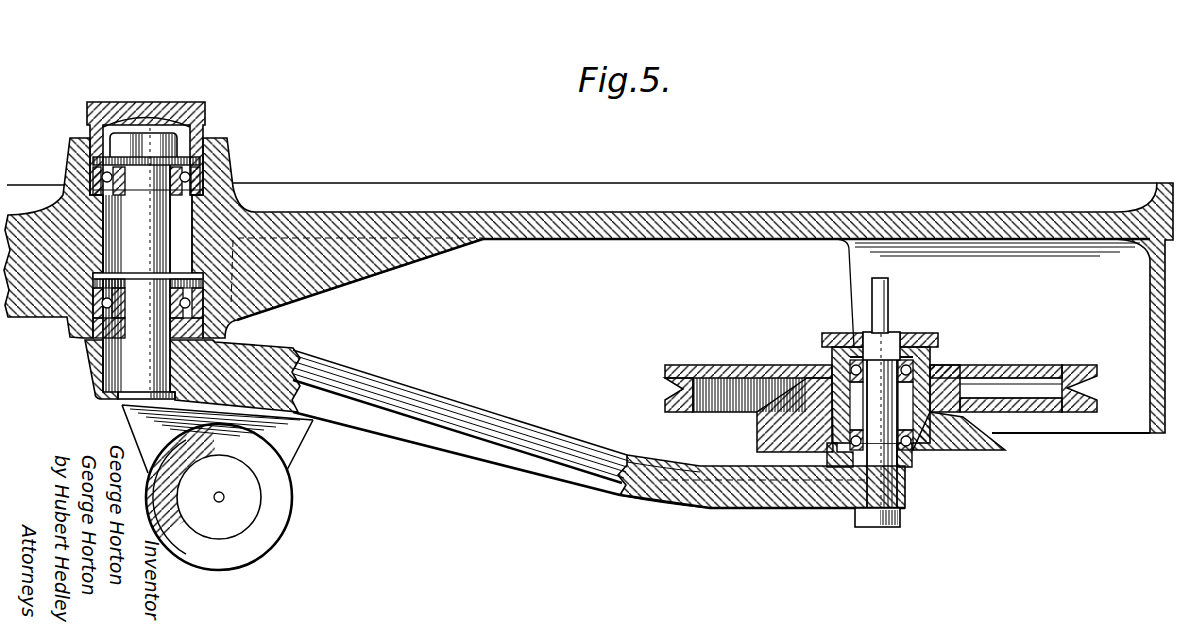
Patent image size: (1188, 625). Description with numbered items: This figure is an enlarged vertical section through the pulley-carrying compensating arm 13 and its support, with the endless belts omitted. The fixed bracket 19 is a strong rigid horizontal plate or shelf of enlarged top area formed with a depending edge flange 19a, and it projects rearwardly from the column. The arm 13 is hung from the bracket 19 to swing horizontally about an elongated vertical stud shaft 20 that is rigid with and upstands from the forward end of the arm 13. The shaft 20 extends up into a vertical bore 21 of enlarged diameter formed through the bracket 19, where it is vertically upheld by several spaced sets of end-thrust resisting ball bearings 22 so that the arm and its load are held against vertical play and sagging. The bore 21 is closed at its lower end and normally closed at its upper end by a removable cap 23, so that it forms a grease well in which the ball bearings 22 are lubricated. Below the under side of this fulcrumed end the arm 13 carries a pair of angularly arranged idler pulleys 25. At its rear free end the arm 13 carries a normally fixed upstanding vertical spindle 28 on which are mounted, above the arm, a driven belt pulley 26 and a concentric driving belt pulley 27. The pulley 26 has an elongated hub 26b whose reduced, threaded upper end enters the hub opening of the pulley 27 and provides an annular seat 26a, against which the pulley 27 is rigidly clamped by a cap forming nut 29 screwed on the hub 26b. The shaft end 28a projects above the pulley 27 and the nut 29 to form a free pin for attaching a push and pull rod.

The compensating arm 13 is at (506, 418).
The fixed bracket 19 is at (43, 317).
The depending edge flange 19a is at (303, 440).
The vertical stud shaft 20 is at (130, 218).
The vertical bore 21 is at (182, 218).
The ball bearings 22 is at (203, 160).
The removable cap 23 is at (190, 101).
The idler pulleys 25 is at (283, 497).
The driven belt pulley 26 is at (998, 452).
The annular seat 26a is at (960, 383).
The elongated hub 26b is at (832, 334).
The driving belt pulley 27 is at (1059, 365).
The vertical spindle 28 is at (893, 332).
The shaft end 28a is at (887, 292).
The cap forming nut 29 is at (945, 337).